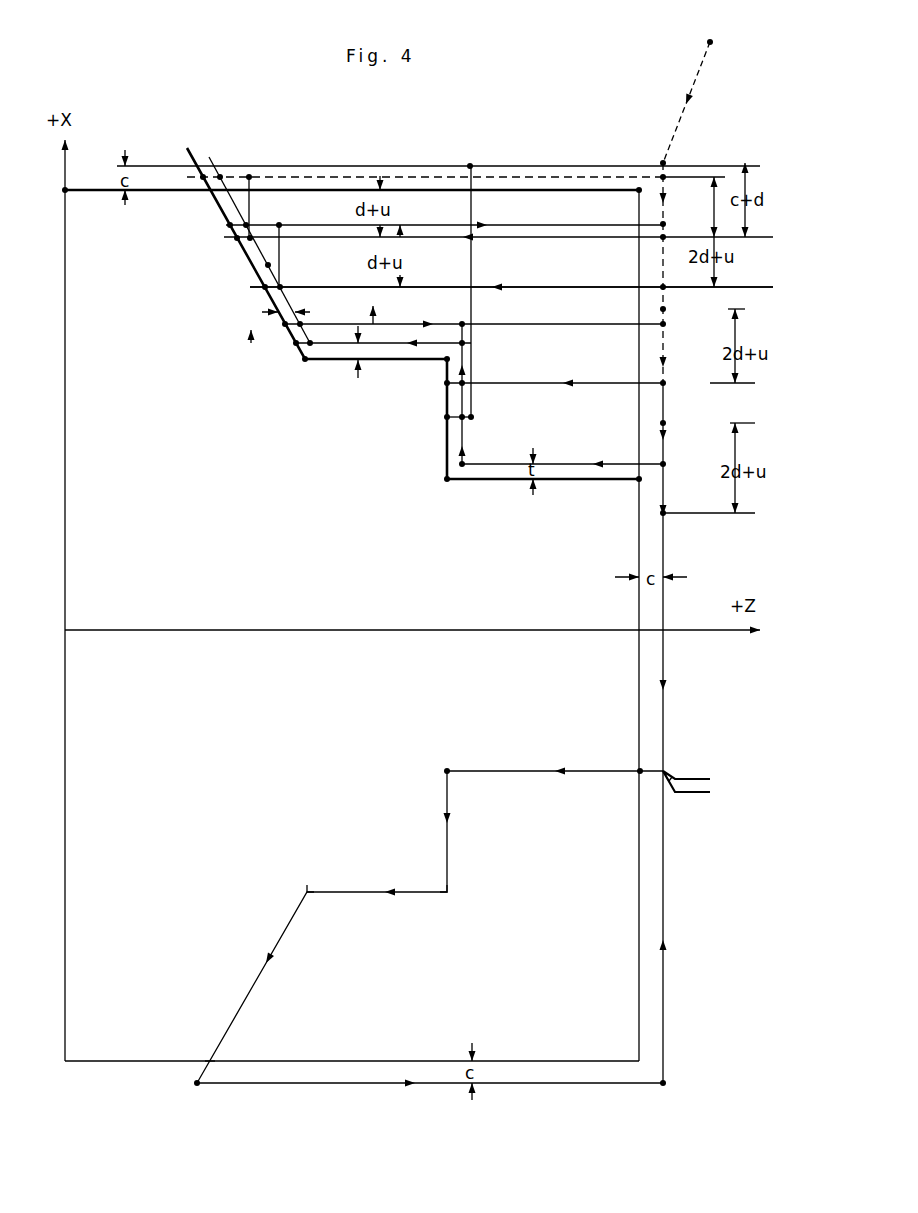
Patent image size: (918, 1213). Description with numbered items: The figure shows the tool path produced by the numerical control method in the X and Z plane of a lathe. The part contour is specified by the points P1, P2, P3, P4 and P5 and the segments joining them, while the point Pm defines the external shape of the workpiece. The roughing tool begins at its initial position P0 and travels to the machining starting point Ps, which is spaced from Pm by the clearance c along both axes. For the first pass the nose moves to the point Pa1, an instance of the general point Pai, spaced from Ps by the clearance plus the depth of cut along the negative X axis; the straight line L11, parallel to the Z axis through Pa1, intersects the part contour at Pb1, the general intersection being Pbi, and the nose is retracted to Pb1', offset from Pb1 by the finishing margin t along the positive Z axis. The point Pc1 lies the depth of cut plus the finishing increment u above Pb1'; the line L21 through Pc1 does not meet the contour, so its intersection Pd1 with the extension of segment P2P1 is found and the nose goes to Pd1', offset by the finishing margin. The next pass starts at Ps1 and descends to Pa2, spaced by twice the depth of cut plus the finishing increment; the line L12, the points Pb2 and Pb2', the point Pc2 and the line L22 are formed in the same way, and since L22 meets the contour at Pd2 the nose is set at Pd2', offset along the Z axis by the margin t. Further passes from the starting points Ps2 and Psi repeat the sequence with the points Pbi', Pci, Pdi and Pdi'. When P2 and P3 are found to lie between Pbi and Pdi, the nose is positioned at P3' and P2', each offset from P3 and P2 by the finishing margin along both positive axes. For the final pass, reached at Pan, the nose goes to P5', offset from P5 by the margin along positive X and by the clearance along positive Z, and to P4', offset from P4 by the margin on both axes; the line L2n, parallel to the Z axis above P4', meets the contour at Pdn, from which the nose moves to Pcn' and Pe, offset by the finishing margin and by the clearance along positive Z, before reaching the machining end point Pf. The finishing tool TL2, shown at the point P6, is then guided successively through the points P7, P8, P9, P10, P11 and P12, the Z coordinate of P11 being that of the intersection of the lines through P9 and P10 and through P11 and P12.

The initial position of the tool P0 is at (727, 101).
The machining starting point Ps is at (651, 150).
The machining end point Pf is at (473, 151).
The point of intersection Pd1 is at (184, 146).
The offset point Pd1' is at (226, 141).
The point spaced from Pb1' Pc1 is at (249, 175).
The part contour point P1 is at (137, 206).
The cutting start point Pc2 is at (282, 216).
The workpiece external shape point Pm is at (592, 203).
The next machining starting point Ps1 is at (679, 186).
The approach point Ps2 is at (666, 222).
The point Pai for the first pass Pa1 is at (679, 228).
The point on final contour Pd2 is at (168, 239).
The point on offset contour Pd2' is at (188, 250).
The point of intersection Pb1 is at (230, 251).
The offset point Pb1' is at (219, 282).
The intersection point Pb2 is at (247, 299).
The intersection point Pb2' is at (299, 278).
The point Pai for the second pass Pa2 is at (680, 278).
The approach point Psi is at (677, 331).
The cutting start point Pci is at (479, 316).
The offset point P3' is at (481, 344).
The point of intersection Pdi is at (252, 349).
The offset point Pdi' is at (268, 361).
The part contour point P2 is at (306, 371).
The offset point P2' is at (323, 378).
The part contour point P3 is at (433, 371).
The point of intersection Pbi is at (421, 397).
The intersection point Pbi' is at (490, 370).
The pass depth point Pai is at (678, 386).
The straight line L2n is at (447, 418).
The clearance point Pe is at (472, 418).
The point of intersection Pdn is at (447, 418).
The offset point Pcn' is at (421, 453).
The part contour point P4 is at (444, 493).
The offset point P4' is at (481, 493).
The part contour point P5 is at (626, 493).
The offset point P5' is at (679, 465).
The cut end point Pan is at (680, 504).
The finish cut path point P6 is at (628, 760).
The finishing path point P7 is at (439, 760).
The finishing path point P8 is at (452, 902).
The finishing path point P9 is at (310, 879).
The finishing path point P10 is at (198, 1050).
The finishing path point P11 is at (178, 1091).
The finishing path point P12 is at (685, 1086).
The tool TL2 is at (688, 778).
The straight line L11 is at (757, 242).
The cutting path line L12 is at (765, 292).
The straight line L21 is at (417, 180).
The straight line L22 is at (428, 228).